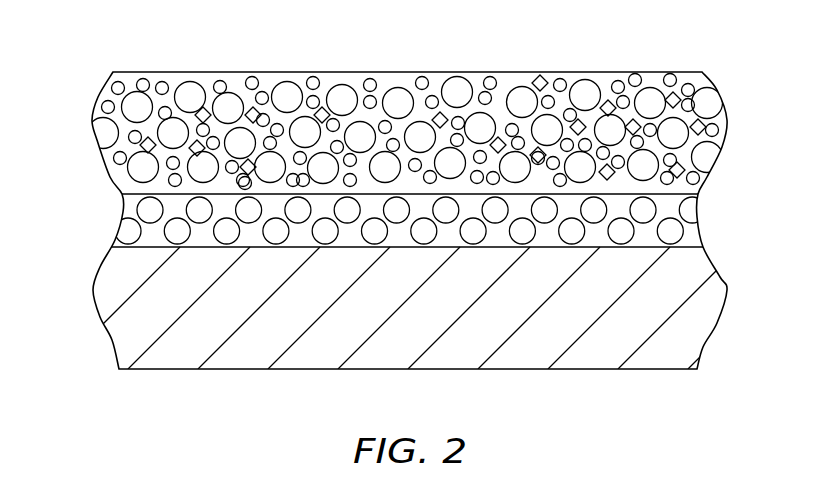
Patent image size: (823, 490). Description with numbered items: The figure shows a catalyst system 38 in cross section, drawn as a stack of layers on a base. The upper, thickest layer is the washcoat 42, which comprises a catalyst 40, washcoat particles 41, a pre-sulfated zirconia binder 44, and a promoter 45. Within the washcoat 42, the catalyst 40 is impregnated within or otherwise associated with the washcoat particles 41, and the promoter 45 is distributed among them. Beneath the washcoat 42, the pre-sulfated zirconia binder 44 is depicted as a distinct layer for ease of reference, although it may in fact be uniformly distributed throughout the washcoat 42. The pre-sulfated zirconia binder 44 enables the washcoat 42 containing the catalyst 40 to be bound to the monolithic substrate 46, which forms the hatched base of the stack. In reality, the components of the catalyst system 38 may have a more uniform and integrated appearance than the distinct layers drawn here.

The catalyst system 38 is at (728, 73).
The catalyst 40 is at (455, 85).
The washcoat particles 41 is at (313, 85).
The washcoat 42 is at (90, 72).
The pre-sulfated zirconia binder 44 is at (155, 237).
The promoter 45 is at (203, 113).
The monolithic substrate 46 is at (158, 310).